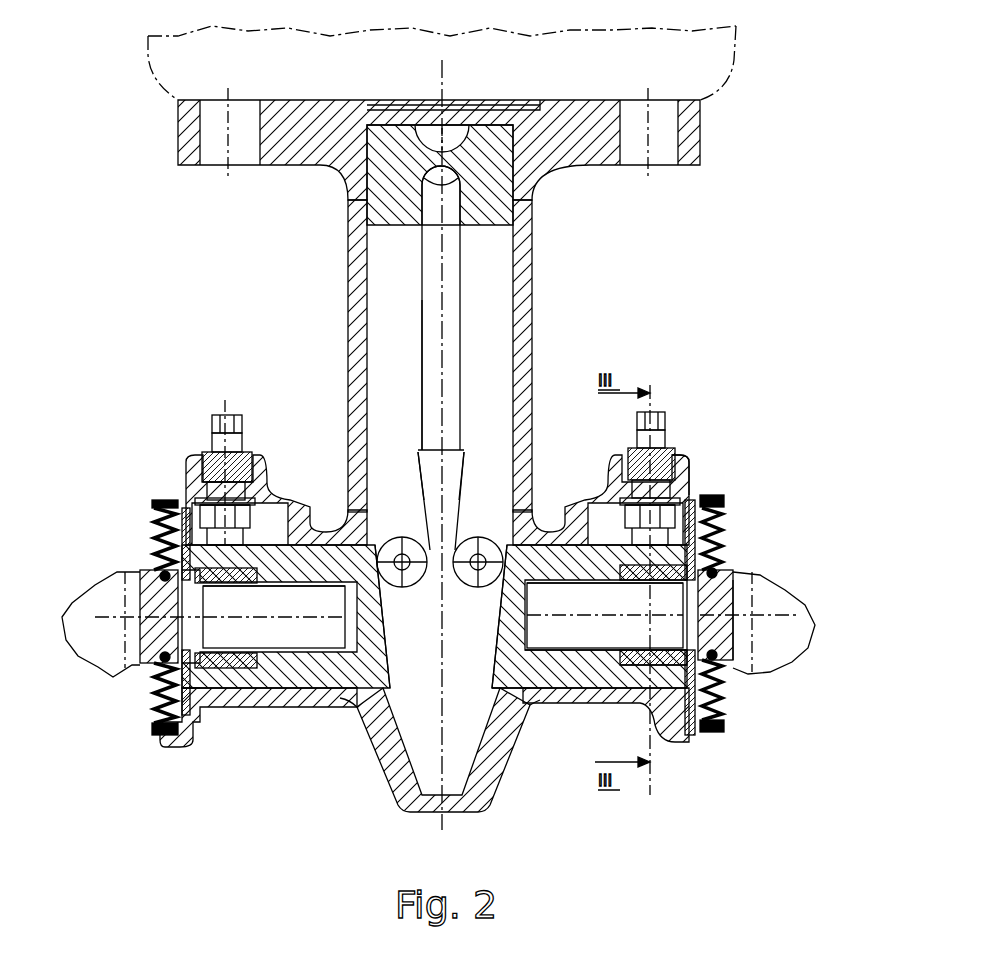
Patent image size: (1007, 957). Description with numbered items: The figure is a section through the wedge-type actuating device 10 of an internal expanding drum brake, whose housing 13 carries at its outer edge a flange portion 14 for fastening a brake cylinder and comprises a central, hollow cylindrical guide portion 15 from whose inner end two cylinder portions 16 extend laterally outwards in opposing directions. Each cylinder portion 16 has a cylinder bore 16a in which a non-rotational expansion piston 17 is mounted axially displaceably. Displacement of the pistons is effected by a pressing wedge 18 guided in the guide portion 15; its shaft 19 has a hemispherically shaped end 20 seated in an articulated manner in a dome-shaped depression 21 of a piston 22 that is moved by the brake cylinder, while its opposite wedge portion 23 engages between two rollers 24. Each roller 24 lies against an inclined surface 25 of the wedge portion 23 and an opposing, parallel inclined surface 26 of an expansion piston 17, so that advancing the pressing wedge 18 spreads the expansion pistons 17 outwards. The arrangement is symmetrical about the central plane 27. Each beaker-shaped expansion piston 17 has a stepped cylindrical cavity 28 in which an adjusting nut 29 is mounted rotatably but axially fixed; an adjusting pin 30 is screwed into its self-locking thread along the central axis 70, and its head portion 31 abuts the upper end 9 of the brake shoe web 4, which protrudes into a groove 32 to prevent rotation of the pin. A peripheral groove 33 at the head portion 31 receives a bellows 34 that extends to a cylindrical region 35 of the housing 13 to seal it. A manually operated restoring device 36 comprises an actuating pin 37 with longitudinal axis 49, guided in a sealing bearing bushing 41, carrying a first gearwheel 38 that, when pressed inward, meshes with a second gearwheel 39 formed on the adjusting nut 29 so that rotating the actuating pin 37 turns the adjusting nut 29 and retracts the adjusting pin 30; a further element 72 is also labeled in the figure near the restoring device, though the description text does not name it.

The brake shoe web 4 is at (800, 596).
The upper end of brake shoe web 9 is at (770, 598).
The actuating device 10 is at (740, 96).
The housing 13 is at (542, 307).
The flange portion 14 is at (700, 128).
The guide portion 15 is at (355, 263).
The cylinder portion 16 is at (598, 690).
The cylinder bore 16a is at (528, 690).
The expansion piston 17 is at (545, 665).
The pressing wedge 18 is at (470, 352).
The shaft 19 is at (450, 270).
The hemispherically shaped end 20 is at (447, 177).
The dome-shaped depression 21 is at (437, 168).
The piston 22 is at (393, 162).
The wedge portion 23 is at (448, 468).
The roller 24 is at (478, 545).
The inclined surface of wedge portion 25 is at (456, 485).
The inclined surface of expansion piston 26 is at (490, 628).
The central plane 27 is at (443, 741).
The cylindrical cavity 28 is at (573, 665).
The adjusting nut 29 is at (630, 690).
The adjusting pin 30 is at (590, 690).
The head portion 31 is at (735, 680).
The groove 32 is at (718, 655).
The peripheral groove 33 is at (753, 567).
The bellows 34 is at (720, 535).
The cylindrical region 35 is at (697, 742).
The restoring device 36 is at (692, 416).
The actuating pin 37 is at (660, 438).
The first gearwheel 38 is at (705, 492).
The second gearwheel 39 is at (712, 508).
The bearing bushing 41 is at (692, 458).
The longitudinal axis 49 is at (652, 600).
The central axis 70 is at (443, 599).
The nut 72 is at (630, 480).